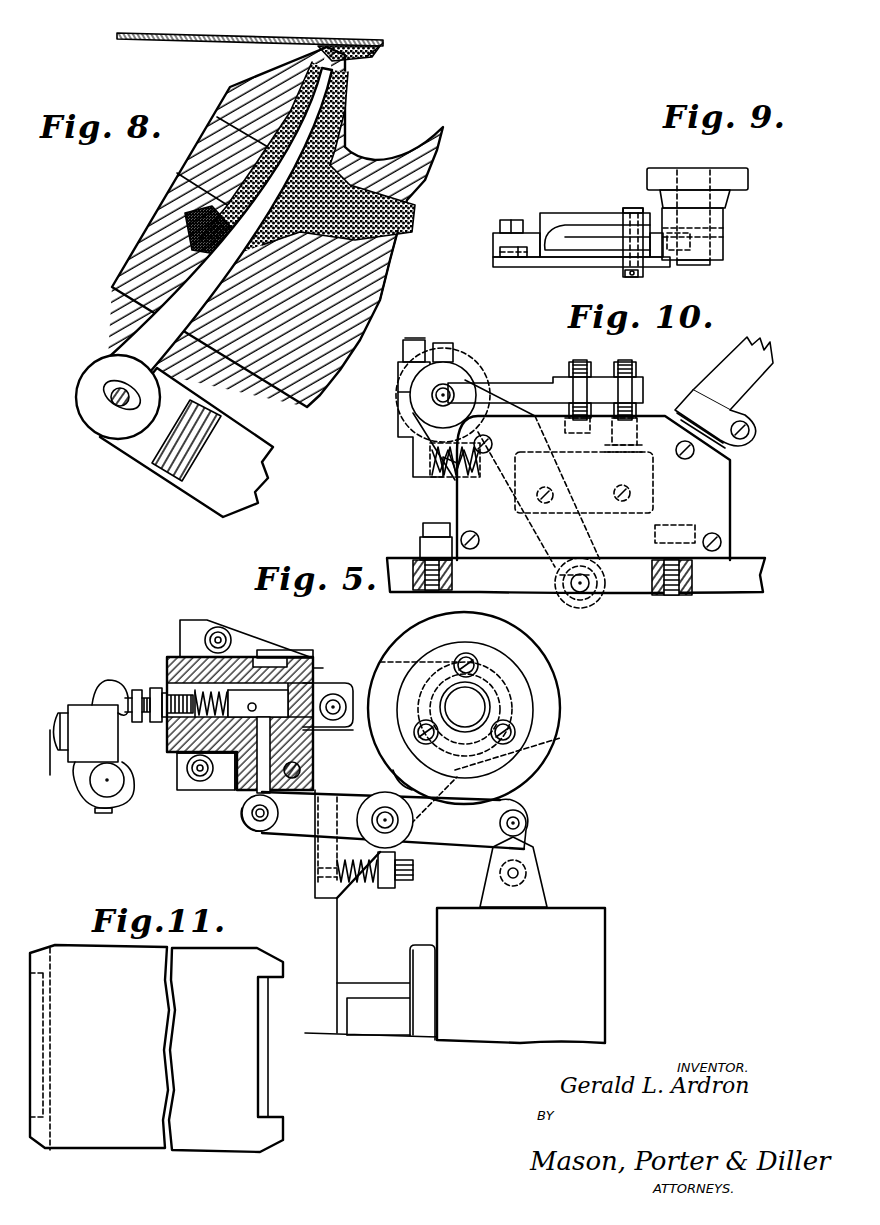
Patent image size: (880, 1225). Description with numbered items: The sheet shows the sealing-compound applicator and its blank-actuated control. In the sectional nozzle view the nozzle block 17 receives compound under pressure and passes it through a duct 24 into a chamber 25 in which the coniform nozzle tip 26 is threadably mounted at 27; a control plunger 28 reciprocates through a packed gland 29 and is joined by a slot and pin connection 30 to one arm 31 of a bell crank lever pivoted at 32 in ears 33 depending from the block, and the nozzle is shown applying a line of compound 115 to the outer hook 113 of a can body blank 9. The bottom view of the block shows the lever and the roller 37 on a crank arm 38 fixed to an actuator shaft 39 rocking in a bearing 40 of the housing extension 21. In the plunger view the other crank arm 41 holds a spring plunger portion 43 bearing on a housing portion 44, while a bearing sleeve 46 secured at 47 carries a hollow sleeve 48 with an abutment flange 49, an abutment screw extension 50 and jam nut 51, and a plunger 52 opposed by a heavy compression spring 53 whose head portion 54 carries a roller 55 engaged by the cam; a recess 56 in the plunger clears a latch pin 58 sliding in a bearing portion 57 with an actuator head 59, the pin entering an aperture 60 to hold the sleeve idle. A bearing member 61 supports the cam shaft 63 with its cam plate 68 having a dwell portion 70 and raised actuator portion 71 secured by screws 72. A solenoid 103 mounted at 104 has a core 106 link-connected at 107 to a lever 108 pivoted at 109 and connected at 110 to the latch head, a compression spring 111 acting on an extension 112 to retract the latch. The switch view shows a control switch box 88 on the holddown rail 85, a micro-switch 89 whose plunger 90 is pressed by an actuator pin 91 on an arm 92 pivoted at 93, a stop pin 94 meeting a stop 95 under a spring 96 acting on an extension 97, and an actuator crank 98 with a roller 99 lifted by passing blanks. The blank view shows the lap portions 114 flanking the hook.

In FIG. 8, the can body blank 9 is at (266, 36).
In FIG. 11, the can body blank 9 is at (245, 1072).
In FIG. 8, the nozzle block 17 is at (434, 166).
In FIG. 5, the housing extension 21 is at (323, 940).
In FIG. 8, the duct 24 is at (381, 259).
In FIG. 8, the chamber 25 is at (238, 174).
In FIG. 8, the coniform nozzle tip 26 is at (342, 108).
In FIG. 8, the threaded mounting 27 is at (333, 162).
In FIG. 8, the control plunger 28 is at (312, 92).
In FIG. 8, the packed gland 29 is at (190, 232).
In FIG. 8, the slot and pin connection 30 is at (108, 399).
In FIG. 9, the slot and pin connection 30 is at (500, 253).
In FIG. 8, the bell crank lever arm 31 is at (170, 457).
In FIG. 9, the bell crank lever arm 31 is at (523, 267).
In FIG. 9, the pivot 32 is at (627, 207).
In FIG. 9, the ears 33 is at (587, 263).
In FIG. 9, the roller 37 is at (713, 263).
In FIG. 9, the crank arm 38 is at (724, 237).
In FIG. 9, the actuator shaft 39 is at (727, 203).
In FIG. 5, the actuator shaft 39 is at (98, 788).
In FIG. 9, the bearing 40 is at (698, 192).
In FIG. 5, the crank arm 41 is at (109, 681).
In FIG. 5, the plunger portion 43 is at (64, 713).
In FIG. 5, the housing portion 44 is at (48, 727).
In FIG. 5, the bearing sleeve 46 is at (240, 690).
In FIG. 5, the securing means 47 is at (214, 627).
In FIG. 5, the hollow sleeve 48 is at (256, 705).
In FIG. 5, the abutment flange 49 is at (168, 741).
In FIG. 5, the abutment screw extension 50 is at (136, 690).
In FIG. 5, the jam nut 51 is at (156, 688).
In FIG. 5, the plunger 52 is at (272, 658).
In FIG. 5, the compression spring 53 is at (228, 656).
In FIG. 5, the head portion 54 is at (350, 686).
In FIG. 5, the roller 55 is at (352, 705).
In FIG. 5, the elongated recess 56 is at (312, 685).
In FIG. 5, the bearing portion 57 is at (240, 795).
In FIG. 5, the latch pin 58 is at (313, 752).
In FIG. 5, the actuator head 59 is at (257, 830).
In FIG. 5, the aperture 60 is at (182, 758).
In FIG. 5, the bearing member 61 is at (548, 740).
In FIG. 5, the cam shaft 63 is at (470, 707).
In FIG. 5, the cam plate 68 is at (543, 665).
In FIG. 5, the concentric dwell portion 70 is at (561, 714).
In FIG. 5, the actuator cam portion 71 is at (416, 740).
In FIG. 5, the screws 72 is at (432, 743).
In FIG. 10, the holddown rail 85 is at (742, 568).
In FIG. 10, the control switch box 88 is at (716, 493).
In FIG. 10, the micro-switch 89 is at (583, 497).
In FIG. 10, the switch plunger 90 is at (605, 490).
In FIG. 10, the actuator pin 91 is at (634, 413).
In FIG. 10, the arm 92 is at (532, 383).
In FIG. 10, the pivot 93 is at (450, 390).
In FIG. 10, the stop pin 94 is at (548, 420).
In FIG. 10, the stop 95 is at (580, 433).
In FIG. 10, the compression spring 96 is at (415, 480).
In FIG. 10, the extension 97 is at (410, 457).
In FIG. 10, the switch actuator crank 98 is at (503, 497).
In FIG. 10, the roller 99 is at (590, 603).
In FIG. 5, the solenoid 103 is at (600, 950).
In FIG. 5, the solenoid mounting 104 is at (428, 1003).
In FIG. 5, the solenoid core 106 is at (530, 895).
In FIG. 5, the link connection 107 is at (522, 846).
In FIG. 5, the lever 108 is at (448, 843).
In FIG. 5, the lever pivot 109 is at (382, 816).
In FIG. 5, the connection 110 is at (262, 820).
In FIG. 5, the compression spring 111 is at (360, 884).
In FIG. 5, the extension 112 is at (392, 889).
In FIG. 8, the outer hook 113 is at (373, 53).
In FIG. 11, the outer hook 113 is at (50, 1030).
In FIG. 11, the lap portions 114 is at (40, 948).
In FIG. 8, the line of sealing compound 115 is at (343, 50).
In FIG. 11, the line of sealing compound 115 is at (50, 1077).